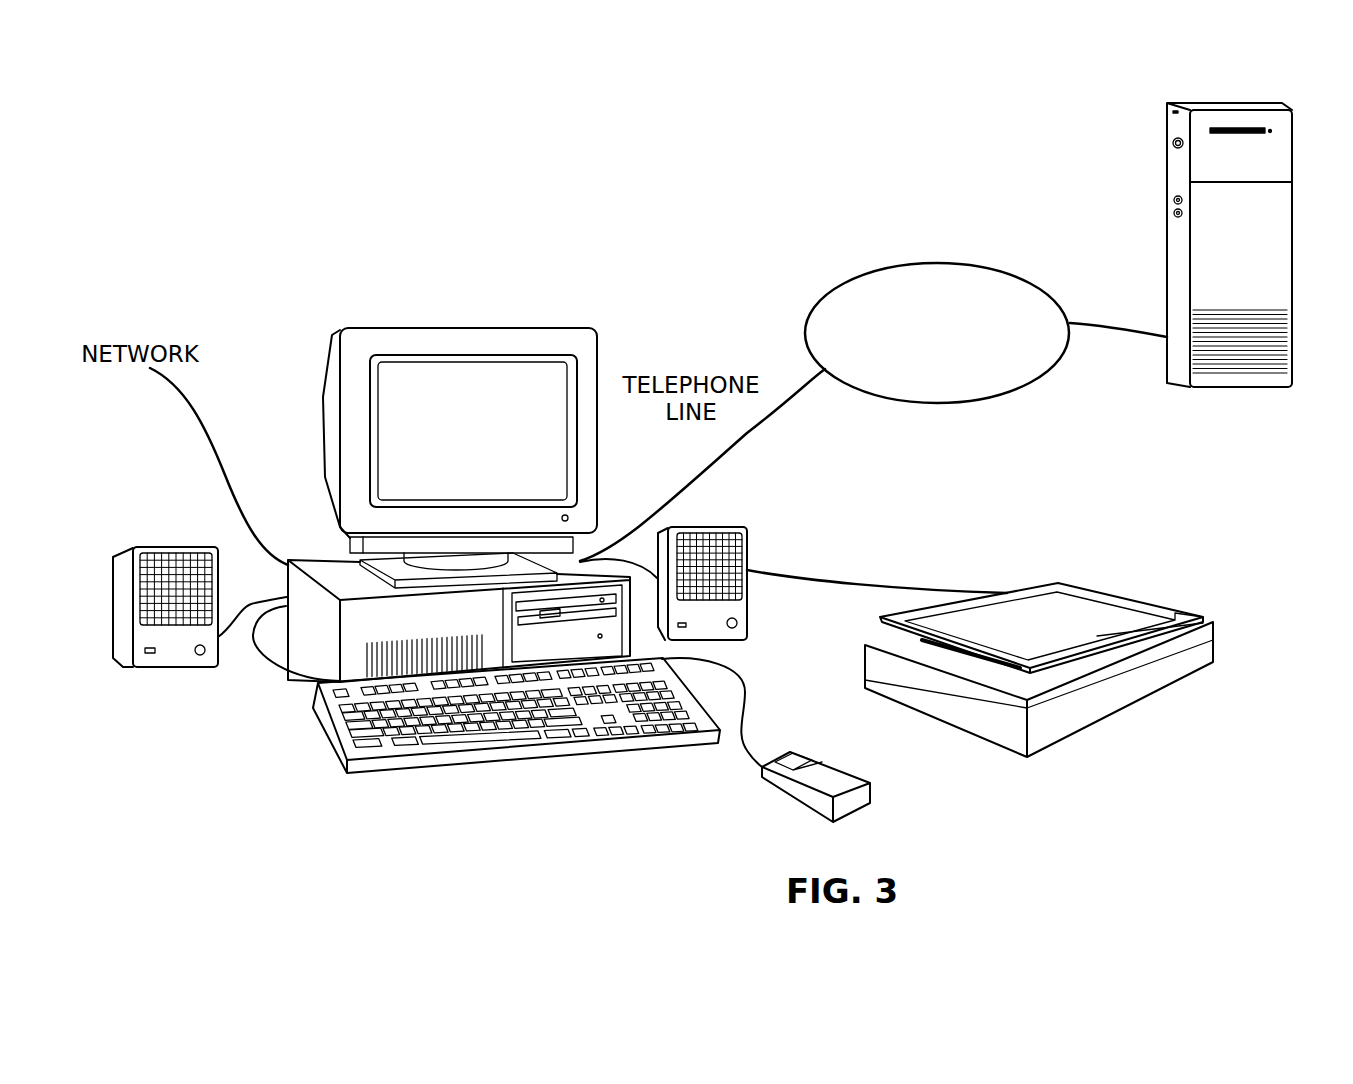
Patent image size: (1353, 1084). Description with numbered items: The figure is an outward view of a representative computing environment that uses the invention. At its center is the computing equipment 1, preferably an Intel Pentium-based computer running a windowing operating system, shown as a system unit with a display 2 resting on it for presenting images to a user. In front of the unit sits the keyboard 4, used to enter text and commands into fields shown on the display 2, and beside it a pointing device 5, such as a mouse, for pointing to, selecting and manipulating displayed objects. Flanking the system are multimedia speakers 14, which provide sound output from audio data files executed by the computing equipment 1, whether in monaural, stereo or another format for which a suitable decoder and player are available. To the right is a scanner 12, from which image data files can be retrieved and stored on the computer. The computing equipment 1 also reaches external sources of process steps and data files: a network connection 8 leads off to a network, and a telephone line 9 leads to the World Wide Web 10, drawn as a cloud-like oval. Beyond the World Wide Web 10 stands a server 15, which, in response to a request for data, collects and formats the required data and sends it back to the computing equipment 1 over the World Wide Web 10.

The computing equipment 1 is at (602, 312).
The display 2 is at (437, 325).
The keyboard 4 is at (538, 748).
The pointing device 5 is at (858, 795).
The network connection 8 is at (203, 430).
The telephone line 9 is at (780, 407).
The World Wide Web 10 is at (1008, 275).
The scanner 12 is at (1103, 720).
The multimedia speakers 14 is at (177, 547).
The server 15 is at (1292, 228).